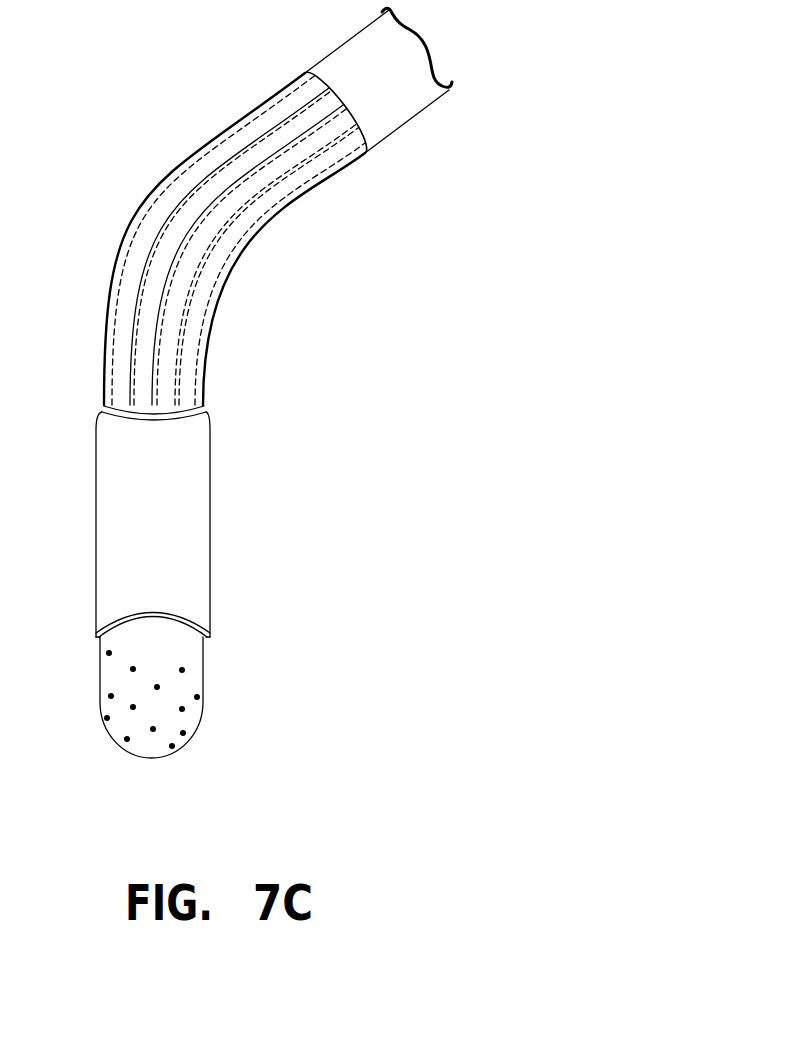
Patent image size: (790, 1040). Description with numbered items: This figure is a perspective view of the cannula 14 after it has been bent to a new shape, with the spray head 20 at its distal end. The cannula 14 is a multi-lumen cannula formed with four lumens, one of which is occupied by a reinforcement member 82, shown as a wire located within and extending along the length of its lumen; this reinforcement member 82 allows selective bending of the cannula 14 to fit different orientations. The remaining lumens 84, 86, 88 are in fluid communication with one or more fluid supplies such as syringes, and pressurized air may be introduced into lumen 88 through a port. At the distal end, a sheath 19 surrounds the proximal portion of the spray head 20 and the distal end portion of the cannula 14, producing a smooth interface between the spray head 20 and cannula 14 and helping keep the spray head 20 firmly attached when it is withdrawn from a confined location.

The cannula 14 is at (155, 198).
The sheath 19 is at (95, 522).
The spray head 20 is at (163, 758).
The reinforcement member 82 is at (327, 102).
The lumen 84 is at (322, 167).
The lumen 86 is at (340, 126).
The lumen 88 is at (287, 107).